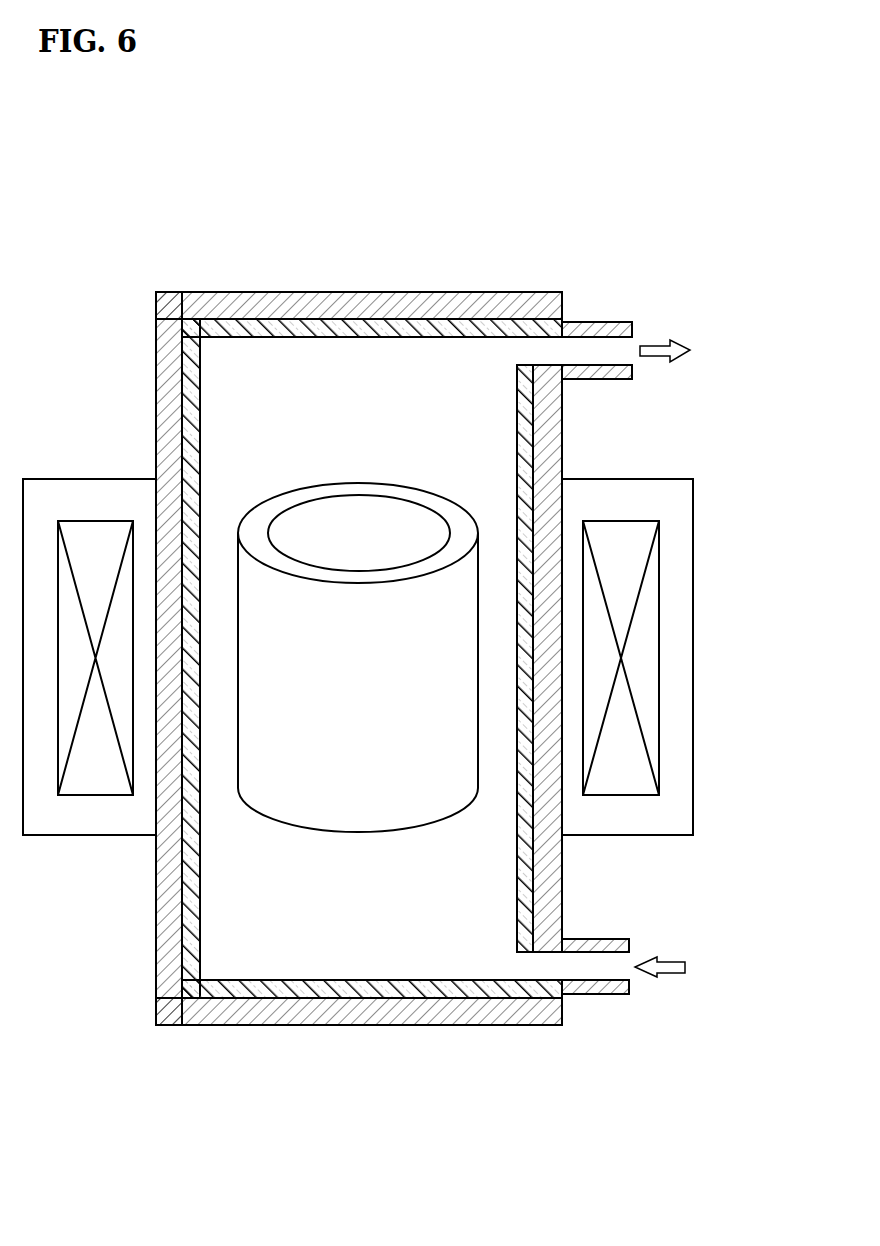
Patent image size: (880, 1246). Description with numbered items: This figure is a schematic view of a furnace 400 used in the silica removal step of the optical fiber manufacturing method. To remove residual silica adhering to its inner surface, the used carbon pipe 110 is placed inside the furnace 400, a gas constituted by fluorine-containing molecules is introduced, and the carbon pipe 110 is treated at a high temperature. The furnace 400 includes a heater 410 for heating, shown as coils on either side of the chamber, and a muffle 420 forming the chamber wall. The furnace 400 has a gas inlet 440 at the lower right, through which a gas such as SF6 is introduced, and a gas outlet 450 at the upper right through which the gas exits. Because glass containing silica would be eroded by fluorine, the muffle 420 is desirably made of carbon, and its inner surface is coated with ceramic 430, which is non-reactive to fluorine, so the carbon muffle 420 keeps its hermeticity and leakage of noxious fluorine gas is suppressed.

The furnace 400 is at (414, 619).
The heater 410 is at (650, 572).
The muffle 420 is at (223, 1015).
The ceramic 430 is at (362, 988).
The gas inlet 440 is at (600, 968).
The gas outlet 450 is at (602, 348).
The carbon pipe 110 is at (455, 510).